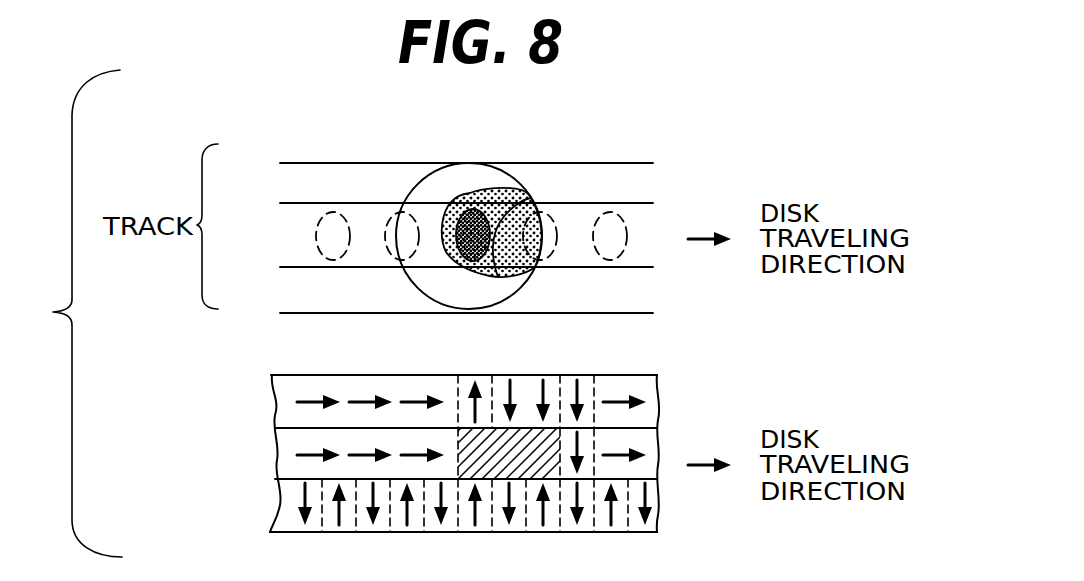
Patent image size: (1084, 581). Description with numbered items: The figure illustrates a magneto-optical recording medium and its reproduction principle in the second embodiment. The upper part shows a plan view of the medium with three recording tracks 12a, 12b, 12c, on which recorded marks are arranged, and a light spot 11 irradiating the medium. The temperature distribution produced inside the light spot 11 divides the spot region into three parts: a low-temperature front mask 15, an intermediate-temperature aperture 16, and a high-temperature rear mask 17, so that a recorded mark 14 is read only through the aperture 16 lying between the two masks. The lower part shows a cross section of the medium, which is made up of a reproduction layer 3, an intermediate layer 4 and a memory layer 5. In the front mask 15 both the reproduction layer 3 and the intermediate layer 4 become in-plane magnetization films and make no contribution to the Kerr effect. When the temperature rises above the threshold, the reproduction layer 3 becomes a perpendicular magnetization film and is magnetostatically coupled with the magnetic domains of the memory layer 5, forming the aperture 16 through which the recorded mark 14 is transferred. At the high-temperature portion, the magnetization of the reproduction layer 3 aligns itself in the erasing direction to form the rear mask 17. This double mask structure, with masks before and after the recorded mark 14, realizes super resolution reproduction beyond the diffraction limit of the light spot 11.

The reproduction layer 3 is at (275, 393).
The intermediate layer 4 is at (277, 443).
The memory layer 5 is at (285, 515).
The light spot 11 is at (435, 165).
The track 12a is at (284, 185).
The track 12b is at (284, 238).
The track 12c is at (284, 292).
The recorded mark 14 is at (471, 193).
The front mask 15 is at (415, 193).
The aperture 16 is at (535, 198).
The rear mask 17 is at (530, 235).